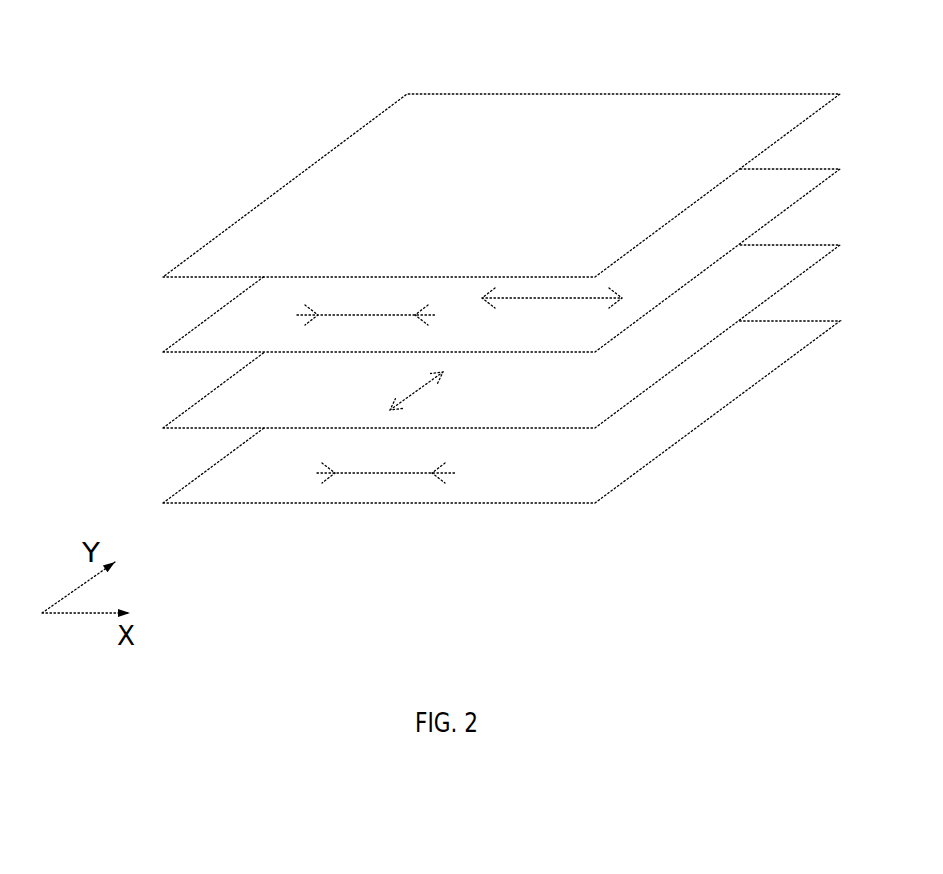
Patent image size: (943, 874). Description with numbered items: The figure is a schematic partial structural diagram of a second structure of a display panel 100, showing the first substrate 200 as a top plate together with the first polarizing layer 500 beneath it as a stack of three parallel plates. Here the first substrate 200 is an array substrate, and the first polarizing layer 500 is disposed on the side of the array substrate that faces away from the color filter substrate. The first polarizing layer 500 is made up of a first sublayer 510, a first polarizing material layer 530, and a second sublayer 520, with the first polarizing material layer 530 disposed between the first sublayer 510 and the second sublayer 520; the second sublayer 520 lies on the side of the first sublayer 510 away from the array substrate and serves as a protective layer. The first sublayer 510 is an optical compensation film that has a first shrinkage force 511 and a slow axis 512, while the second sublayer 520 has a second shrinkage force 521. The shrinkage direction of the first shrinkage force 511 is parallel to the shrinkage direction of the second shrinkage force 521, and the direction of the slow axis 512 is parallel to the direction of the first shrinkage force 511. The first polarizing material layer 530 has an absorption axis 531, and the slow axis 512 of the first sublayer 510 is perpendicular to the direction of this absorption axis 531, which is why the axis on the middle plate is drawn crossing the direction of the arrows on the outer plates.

The display panel 100 is at (103, 45).
The first substrate 200 is at (284, 184).
The first polarizing layer 500 is at (104, 296).
The first sublayer 510 is at (198, 326).
The first shrinkage force 511 is at (390, 313).
The slow axis 512 is at (572, 300).
The second sublayer 520 is at (207, 472).
The second shrinkage force 521 is at (375, 477).
The first polarizing material layer 530 is at (203, 400).
The absorption axis 531 is at (420, 392).